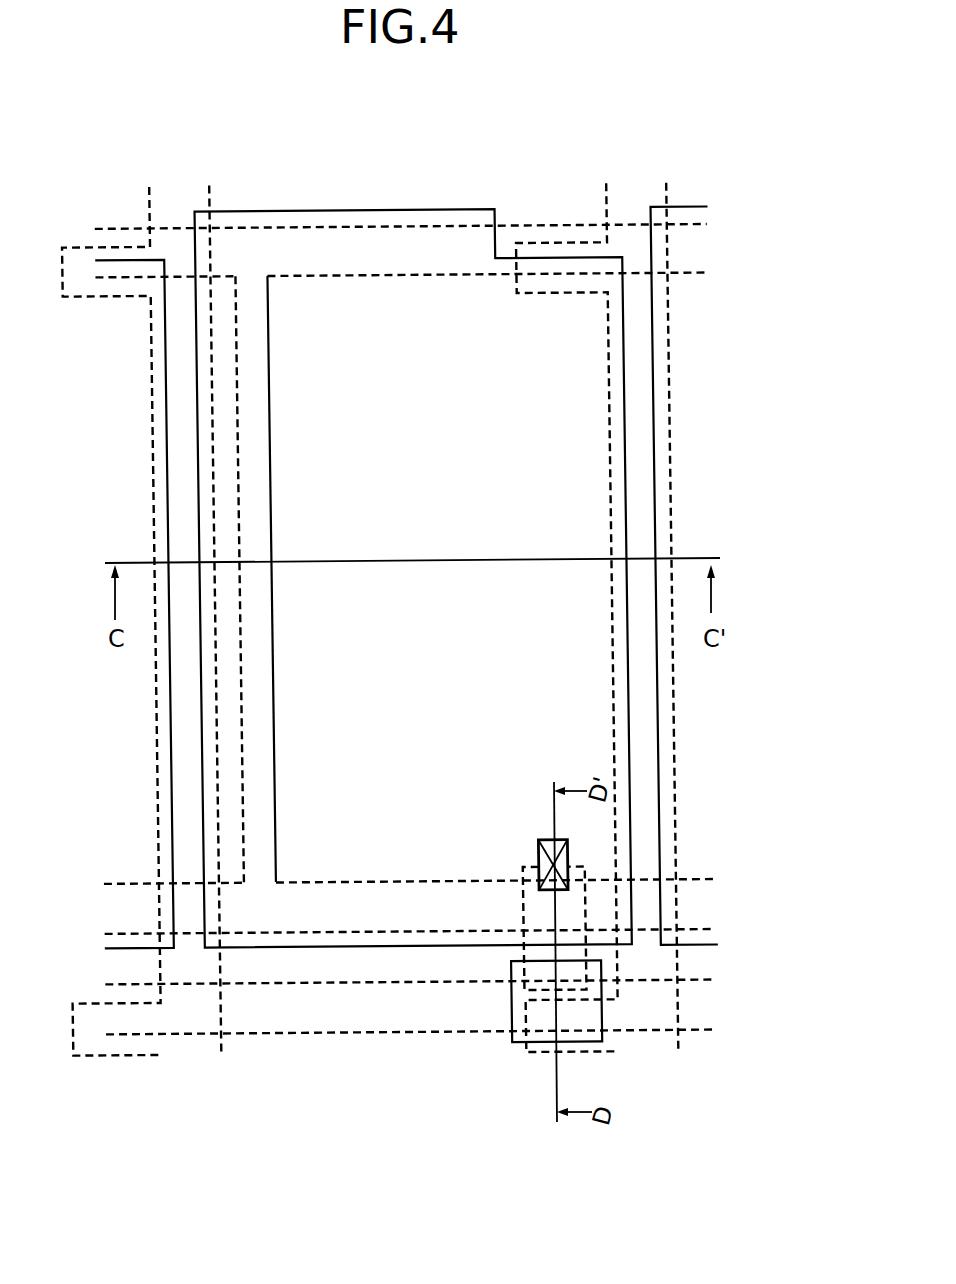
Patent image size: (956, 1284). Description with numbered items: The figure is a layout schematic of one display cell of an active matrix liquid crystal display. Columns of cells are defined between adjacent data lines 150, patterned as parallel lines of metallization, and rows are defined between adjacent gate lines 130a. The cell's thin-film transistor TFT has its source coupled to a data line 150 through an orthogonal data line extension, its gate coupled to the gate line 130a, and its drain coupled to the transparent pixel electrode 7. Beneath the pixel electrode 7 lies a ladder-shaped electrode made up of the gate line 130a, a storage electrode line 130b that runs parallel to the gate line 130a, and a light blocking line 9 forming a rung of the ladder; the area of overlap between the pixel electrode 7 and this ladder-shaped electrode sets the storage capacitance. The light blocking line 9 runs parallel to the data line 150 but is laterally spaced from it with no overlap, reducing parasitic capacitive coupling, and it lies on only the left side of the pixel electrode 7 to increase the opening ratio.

The pixel electrode 7 is at (628, 712).
The light blocking line 9 is at (252, 382).
The gate line 130a is at (692, 248).
The storage electrode line 130b is at (702, 904).
The data line 150 is at (150, 333).
The thin-film transistor TFT is at (505, 1008).